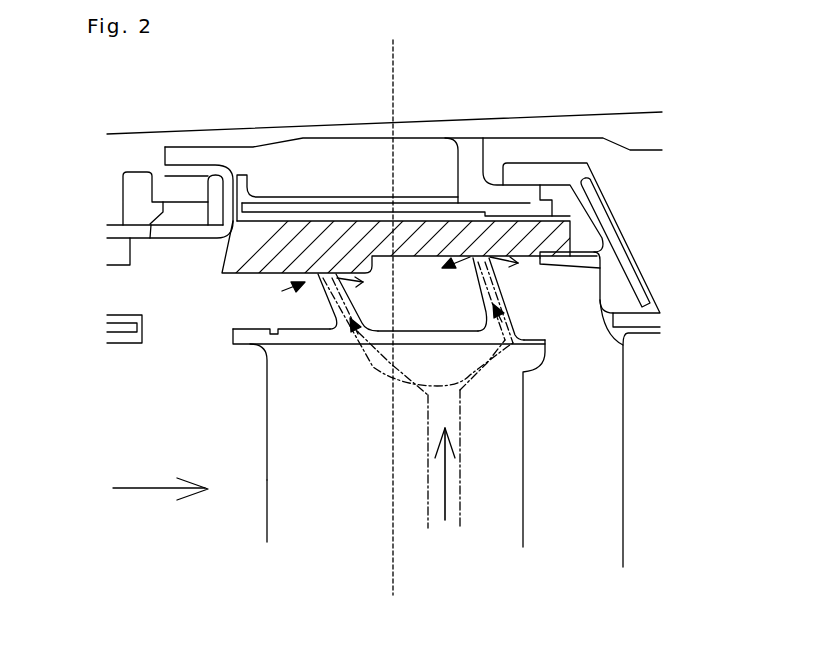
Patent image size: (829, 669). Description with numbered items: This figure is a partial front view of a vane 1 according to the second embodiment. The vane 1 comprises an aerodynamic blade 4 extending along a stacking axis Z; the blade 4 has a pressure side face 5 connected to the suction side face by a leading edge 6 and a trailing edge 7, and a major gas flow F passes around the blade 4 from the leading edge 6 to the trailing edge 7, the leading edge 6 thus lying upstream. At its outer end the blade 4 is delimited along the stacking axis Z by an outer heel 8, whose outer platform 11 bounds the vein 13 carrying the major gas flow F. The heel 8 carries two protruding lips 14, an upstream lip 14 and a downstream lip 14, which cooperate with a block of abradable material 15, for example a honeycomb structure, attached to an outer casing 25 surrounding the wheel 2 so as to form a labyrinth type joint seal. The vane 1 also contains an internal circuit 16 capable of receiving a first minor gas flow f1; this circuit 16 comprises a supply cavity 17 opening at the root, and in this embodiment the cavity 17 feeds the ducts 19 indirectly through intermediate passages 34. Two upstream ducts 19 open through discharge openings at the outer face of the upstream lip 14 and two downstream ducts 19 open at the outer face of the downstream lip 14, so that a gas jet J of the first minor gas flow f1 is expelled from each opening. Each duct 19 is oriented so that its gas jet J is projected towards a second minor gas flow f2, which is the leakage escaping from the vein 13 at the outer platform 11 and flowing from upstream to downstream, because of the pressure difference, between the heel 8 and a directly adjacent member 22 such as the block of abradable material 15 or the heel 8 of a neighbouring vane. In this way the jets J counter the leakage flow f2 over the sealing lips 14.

The vane 1 is at (533, 422).
The wheel 2 is at (600, 458).
The aerodynamic blade 4 is at (523, 532).
The pressure side face 5 is at (293, 517).
The leading edge 6 is at (267, 437).
The trailing edge 7 is at (523, 432).
The outer heel 8 is at (507, 295).
The outer platform 11 is at (275, 328).
The vein 13 is at (136, 551).
The lip 14 is at (575, 322).
The block of abradable material 15 is at (515, 210).
The internal circuit 16 is at (460, 510).
The supply cavity 17 is at (453, 487).
The duct 19 is at (333, 348).
The directly adjacent member 22 is at (540, 213).
The outer casing 25 is at (322, 128).
The intermediate passage 34 is at (367, 357).
The major gas flow F is at (160, 482).
The gas jet J is at (325, 306).
The stacking axis Z is at (393, 512).
The first minor gas flow f1 is at (356, 336).
The second minor gas flow f2 is at (282, 291).